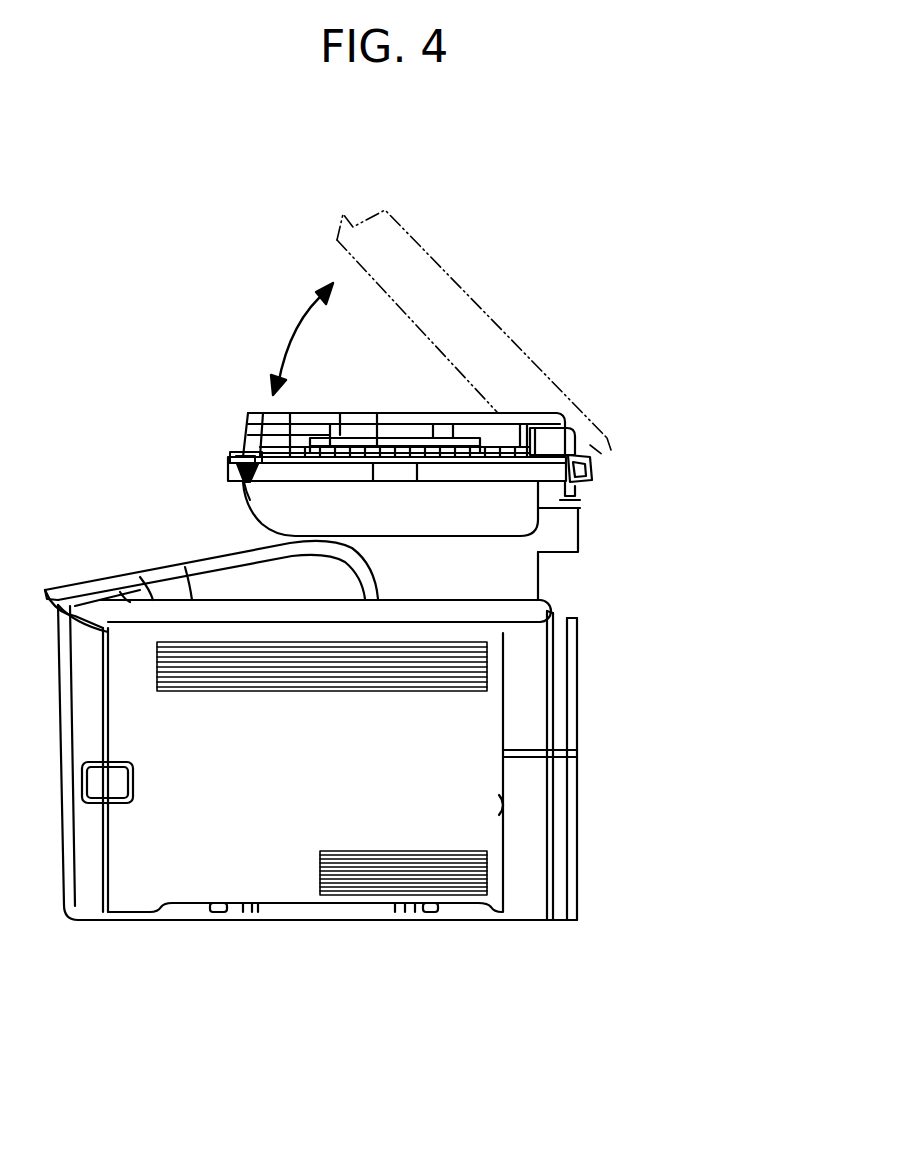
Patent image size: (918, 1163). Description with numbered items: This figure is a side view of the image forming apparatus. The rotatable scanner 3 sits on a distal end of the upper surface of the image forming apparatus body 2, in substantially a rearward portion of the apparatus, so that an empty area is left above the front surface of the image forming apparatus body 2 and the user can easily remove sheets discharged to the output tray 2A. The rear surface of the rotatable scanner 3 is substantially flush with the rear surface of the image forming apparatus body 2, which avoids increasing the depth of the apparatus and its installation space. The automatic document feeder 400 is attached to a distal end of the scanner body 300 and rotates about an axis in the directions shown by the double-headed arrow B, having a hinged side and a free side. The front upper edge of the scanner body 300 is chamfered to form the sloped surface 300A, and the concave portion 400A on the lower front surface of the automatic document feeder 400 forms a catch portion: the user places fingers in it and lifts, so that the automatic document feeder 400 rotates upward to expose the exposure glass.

The image forming apparatus body 2 is at (341, 714).
The output tray 2A is at (218, 578).
The rotatable scanner 3 is at (423, 381).
The scanner body 300 is at (407, 504).
The sloped surface 300A is at (226, 490).
The automatic document feeder 400 is at (407, 346).
The concave portion 400A is at (227, 463).